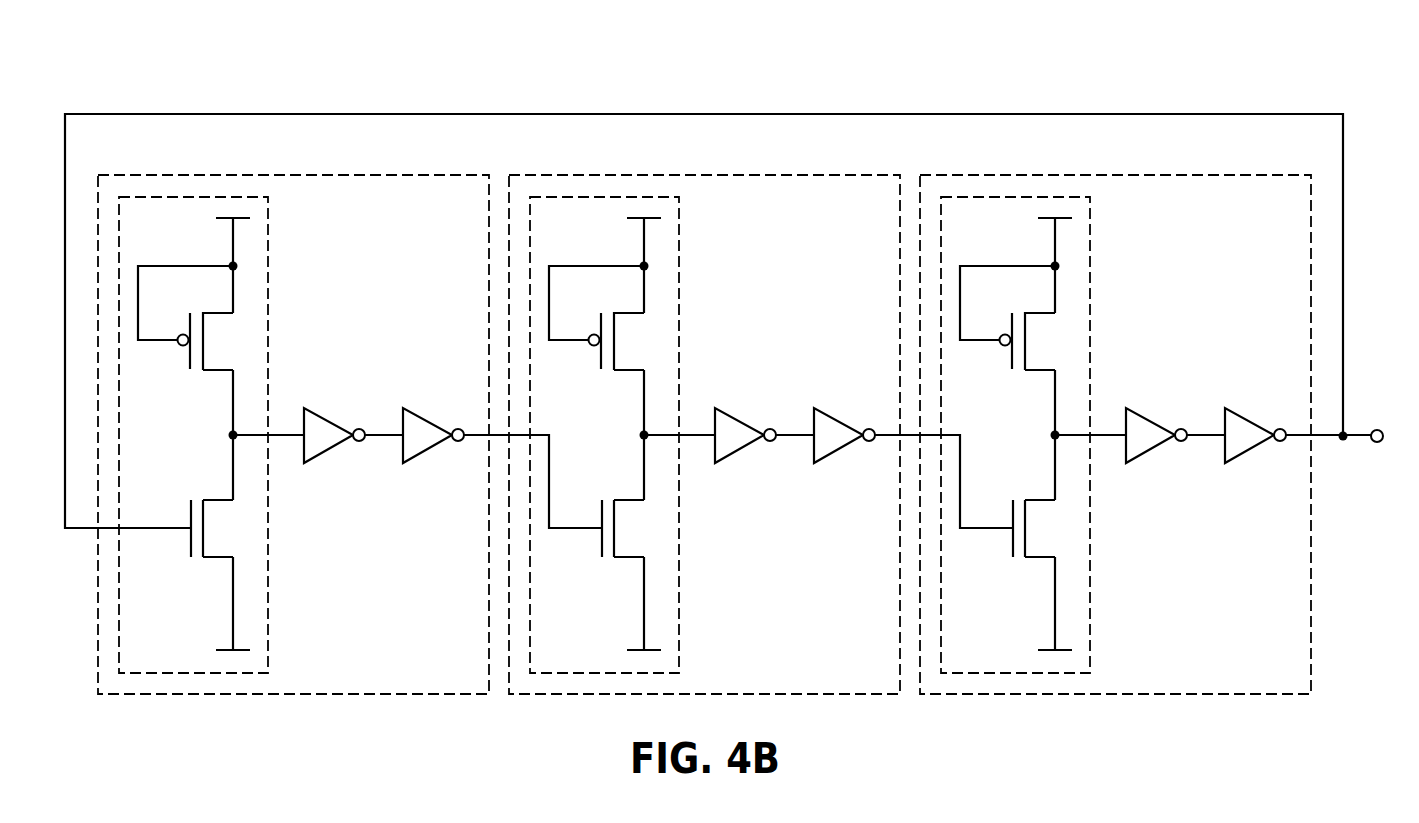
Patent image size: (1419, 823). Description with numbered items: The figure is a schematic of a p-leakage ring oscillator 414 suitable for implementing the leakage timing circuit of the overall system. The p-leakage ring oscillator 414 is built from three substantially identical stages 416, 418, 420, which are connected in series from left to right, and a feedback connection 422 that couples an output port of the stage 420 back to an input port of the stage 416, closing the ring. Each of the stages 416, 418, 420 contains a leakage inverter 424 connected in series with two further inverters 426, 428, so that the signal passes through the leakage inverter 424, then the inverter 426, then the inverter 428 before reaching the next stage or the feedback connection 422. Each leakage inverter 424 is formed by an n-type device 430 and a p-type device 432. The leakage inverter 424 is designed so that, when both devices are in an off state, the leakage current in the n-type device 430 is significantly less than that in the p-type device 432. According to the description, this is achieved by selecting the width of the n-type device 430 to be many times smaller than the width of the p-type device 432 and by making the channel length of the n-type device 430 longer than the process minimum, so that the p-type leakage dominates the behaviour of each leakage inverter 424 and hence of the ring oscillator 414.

The p-leakage ring oscillator 414 is at (1207, 70).
The stage 416 is at (302, 176).
The stage 418 is at (713, 176).
The stage 420 is at (1123, 177).
The feedback connection 422 is at (492, 114).
The leakage inverter 424 is at (269, 250).
The inverter 426 is at (329, 421).
The inverter 428 is at (429, 421).
The n-type device 430 is at (216, 559).
The p-type device 432 is at (215, 372).